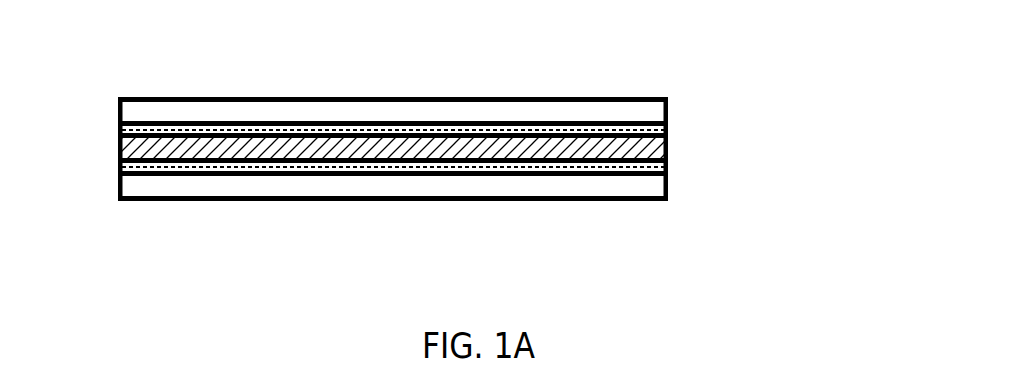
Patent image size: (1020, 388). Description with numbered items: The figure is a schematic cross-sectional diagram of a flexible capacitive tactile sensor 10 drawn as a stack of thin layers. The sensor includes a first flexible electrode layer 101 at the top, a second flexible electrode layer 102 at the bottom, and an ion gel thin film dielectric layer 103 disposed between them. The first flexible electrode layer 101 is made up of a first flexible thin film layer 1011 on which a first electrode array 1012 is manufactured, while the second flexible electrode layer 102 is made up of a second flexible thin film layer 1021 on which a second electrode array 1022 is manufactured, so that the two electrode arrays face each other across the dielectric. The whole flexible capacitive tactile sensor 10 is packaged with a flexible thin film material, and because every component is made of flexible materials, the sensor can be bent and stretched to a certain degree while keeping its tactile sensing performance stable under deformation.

The flexible capacitive tactile sensor 10 is at (231, 30).
The first flexible electrode layer 101 is at (807, 48).
The first flexible thin film layer 1011 is at (447, 87).
The first electrode array 1012 is at (452, 111).
The second flexible electrode layer 102 is at (798, 215).
The second flexible thin film layer 1021 is at (449, 221).
The second electrode array 1022 is at (449, 194).
The ion gel thin film dielectric layer 103 is at (347, 98).